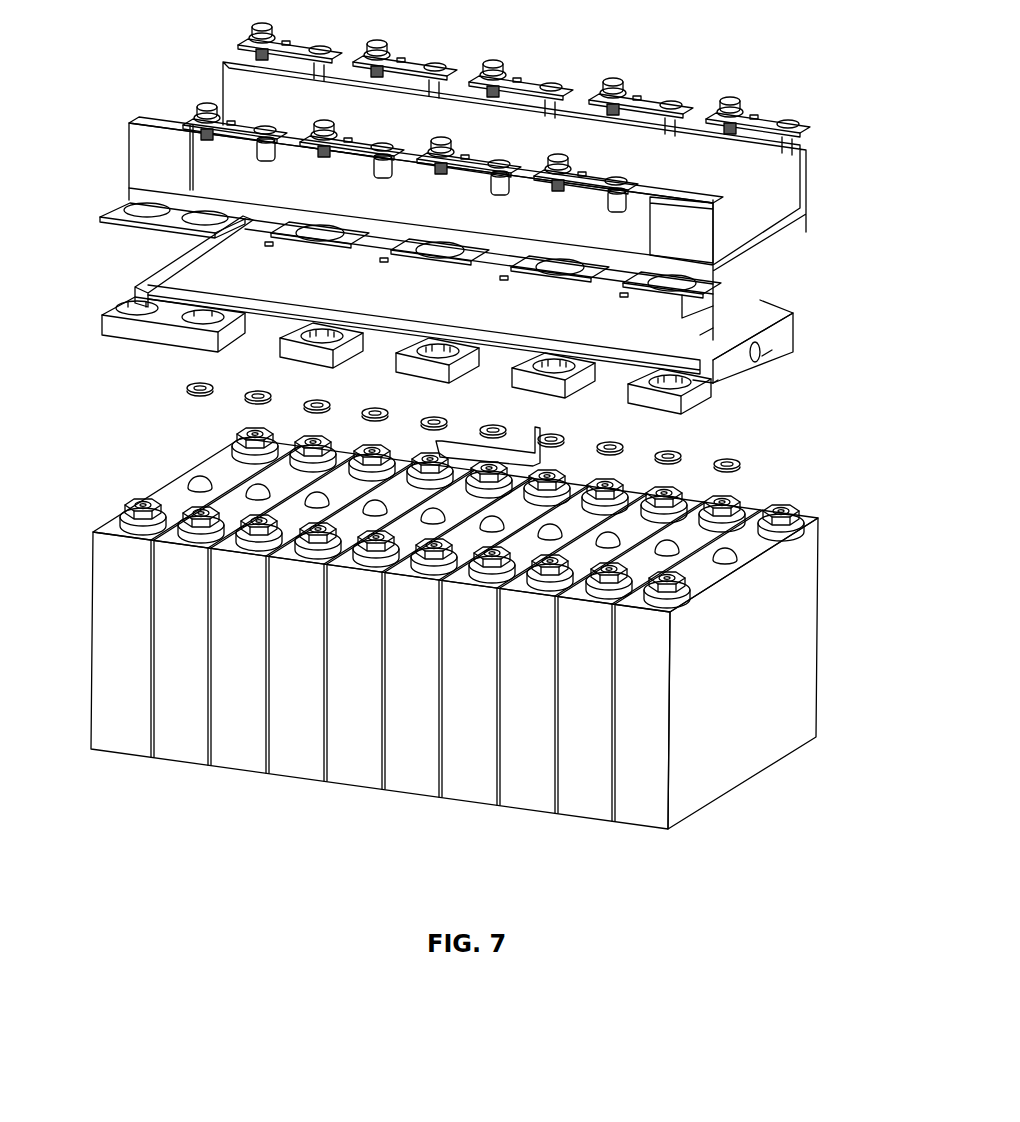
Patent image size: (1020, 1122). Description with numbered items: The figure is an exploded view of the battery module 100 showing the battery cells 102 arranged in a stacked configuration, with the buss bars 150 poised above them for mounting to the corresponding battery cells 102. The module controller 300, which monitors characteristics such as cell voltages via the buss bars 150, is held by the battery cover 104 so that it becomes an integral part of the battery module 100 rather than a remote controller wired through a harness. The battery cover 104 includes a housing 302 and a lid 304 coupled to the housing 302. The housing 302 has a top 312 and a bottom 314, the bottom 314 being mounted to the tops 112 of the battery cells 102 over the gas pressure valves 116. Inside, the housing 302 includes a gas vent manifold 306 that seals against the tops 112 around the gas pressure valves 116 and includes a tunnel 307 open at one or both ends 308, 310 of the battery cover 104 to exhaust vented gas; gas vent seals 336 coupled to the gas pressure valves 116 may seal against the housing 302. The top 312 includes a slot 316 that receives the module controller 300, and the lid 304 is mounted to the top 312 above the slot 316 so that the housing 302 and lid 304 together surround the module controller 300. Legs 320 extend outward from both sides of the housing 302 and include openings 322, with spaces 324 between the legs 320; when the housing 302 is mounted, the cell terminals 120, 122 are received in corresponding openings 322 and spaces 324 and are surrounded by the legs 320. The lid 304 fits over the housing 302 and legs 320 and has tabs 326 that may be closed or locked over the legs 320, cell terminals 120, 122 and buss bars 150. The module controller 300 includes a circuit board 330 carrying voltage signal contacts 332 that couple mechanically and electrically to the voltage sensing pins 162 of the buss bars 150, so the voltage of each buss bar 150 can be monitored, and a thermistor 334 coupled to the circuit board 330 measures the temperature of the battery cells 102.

The battery module 100 is at (117, 41).
The battery cells 102 is at (300, 770).
The battery cover 104 is at (817, 228).
The tops 112 is at (215, 468).
The gas pressure valves 116 is at (192, 483).
The cell terminals 120 is at (221, 432).
The cell terminals 122 is at (109, 506).
The buss bars 150 is at (651, 104).
The voltage sensing pins 162 is at (520, 80).
The module controller 300 is at (745, 320).
The housing 302 is at (725, 367).
The lid 304 is at (770, 215).
The gas vent manifold 306 is at (764, 353).
The tunnel 307 is at (767, 360).
The end 308 is at (717, 382).
The end 310 is at (128, 283).
The top 312 is at (200, 255).
The bottom 314 is at (258, 337).
The slot 316 is at (198, 273).
The legs 320 is at (675, 412).
The openings 322 is at (694, 382).
The spaces 324 is at (620, 400).
The tabs 326 is at (147, 162).
The circuit board 330 is at (398, 322).
The voltage signal contacts 332 is at (480, 372).
The thermistor 334 is at (480, 450).
The gas vent seals 336 is at (742, 465).